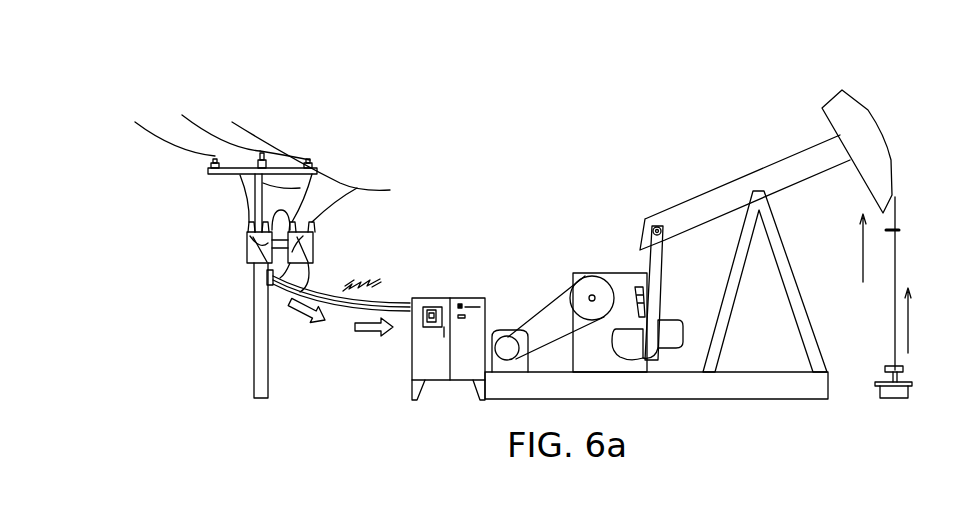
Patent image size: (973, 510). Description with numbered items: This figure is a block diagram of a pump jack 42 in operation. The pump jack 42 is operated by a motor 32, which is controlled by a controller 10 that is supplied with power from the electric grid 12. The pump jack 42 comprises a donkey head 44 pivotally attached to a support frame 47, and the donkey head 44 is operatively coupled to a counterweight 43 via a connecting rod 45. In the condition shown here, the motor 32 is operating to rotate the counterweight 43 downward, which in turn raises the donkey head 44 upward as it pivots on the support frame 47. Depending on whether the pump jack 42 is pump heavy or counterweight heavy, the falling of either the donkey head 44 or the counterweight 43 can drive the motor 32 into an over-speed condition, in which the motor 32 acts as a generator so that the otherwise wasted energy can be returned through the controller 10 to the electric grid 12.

The electric grid 12 is at (330, 146).
The controller 10 is at (410, 350).
The motor 32 is at (498, 330).
The pump jack 42 is at (607, 272).
The counterweight 43 is at (670, 327).
The connecting rod 45 is at (660, 258).
The support frame 47 is at (782, 253).
The donkey head 44 is at (870, 130).